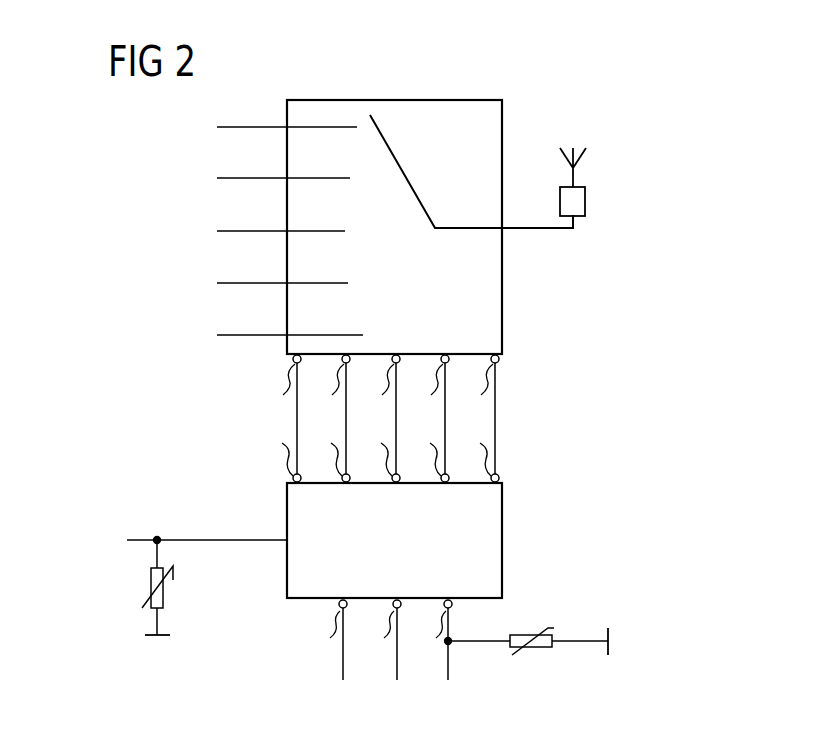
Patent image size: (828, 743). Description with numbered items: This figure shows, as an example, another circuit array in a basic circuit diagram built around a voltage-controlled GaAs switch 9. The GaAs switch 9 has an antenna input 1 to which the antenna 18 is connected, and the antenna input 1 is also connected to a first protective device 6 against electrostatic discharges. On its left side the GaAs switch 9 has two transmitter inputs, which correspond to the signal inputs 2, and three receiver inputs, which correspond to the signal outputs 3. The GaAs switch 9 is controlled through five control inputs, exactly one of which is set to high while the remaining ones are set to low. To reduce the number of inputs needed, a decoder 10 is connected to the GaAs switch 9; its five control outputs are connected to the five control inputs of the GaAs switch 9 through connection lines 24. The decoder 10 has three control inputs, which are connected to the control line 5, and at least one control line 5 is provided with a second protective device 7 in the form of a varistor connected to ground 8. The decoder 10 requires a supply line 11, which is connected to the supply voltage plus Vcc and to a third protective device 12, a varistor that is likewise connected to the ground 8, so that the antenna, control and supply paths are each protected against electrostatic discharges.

The antenna input 1 is at (545, 229).
The signal inputs 2 is at (228, 126).
The signal outputs 3 is at (228, 230).
The control line 5 is at (344, 668).
The first protective device 6 is at (585, 202).
The second protective device 7 is at (535, 660).
The ground 8 is at (158, 640).
The GaAs switch 9 is at (502, 115).
The decoder 10 is at (502, 538).
The supply line 11 is at (223, 542).
The third protective device 12 is at (152, 578).
The antenna 18 is at (566, 160).
The connection lines 24 is at (495, 420).